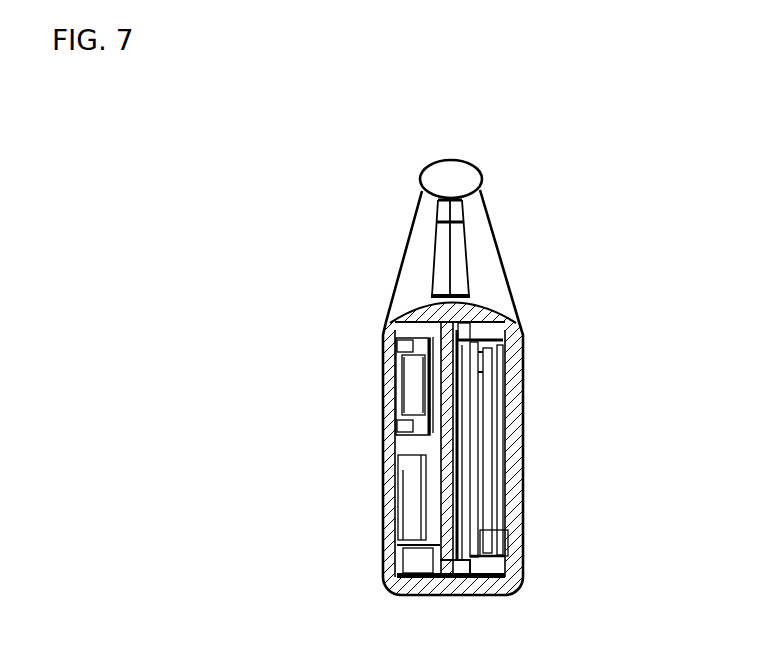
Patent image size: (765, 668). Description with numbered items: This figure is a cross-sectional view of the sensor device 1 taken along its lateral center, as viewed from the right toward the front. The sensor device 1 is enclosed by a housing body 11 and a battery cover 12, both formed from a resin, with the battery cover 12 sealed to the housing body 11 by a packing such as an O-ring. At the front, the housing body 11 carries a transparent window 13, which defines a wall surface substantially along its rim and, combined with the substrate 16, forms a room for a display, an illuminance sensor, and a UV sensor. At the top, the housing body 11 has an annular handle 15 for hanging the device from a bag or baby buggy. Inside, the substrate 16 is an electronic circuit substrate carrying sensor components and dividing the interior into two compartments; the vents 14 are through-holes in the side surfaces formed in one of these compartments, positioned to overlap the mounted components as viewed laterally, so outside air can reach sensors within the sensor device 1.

The sensor device 1 is at (623, 182).
The housing body 11 is at (383, 515).
The battery cover 12 is at (515, 478).
The window 13 is at (378, 405).
The vents 14 is at (410, 400).
The handle 15 is at (452, 158).
The substrate 16 is at (449, 577).